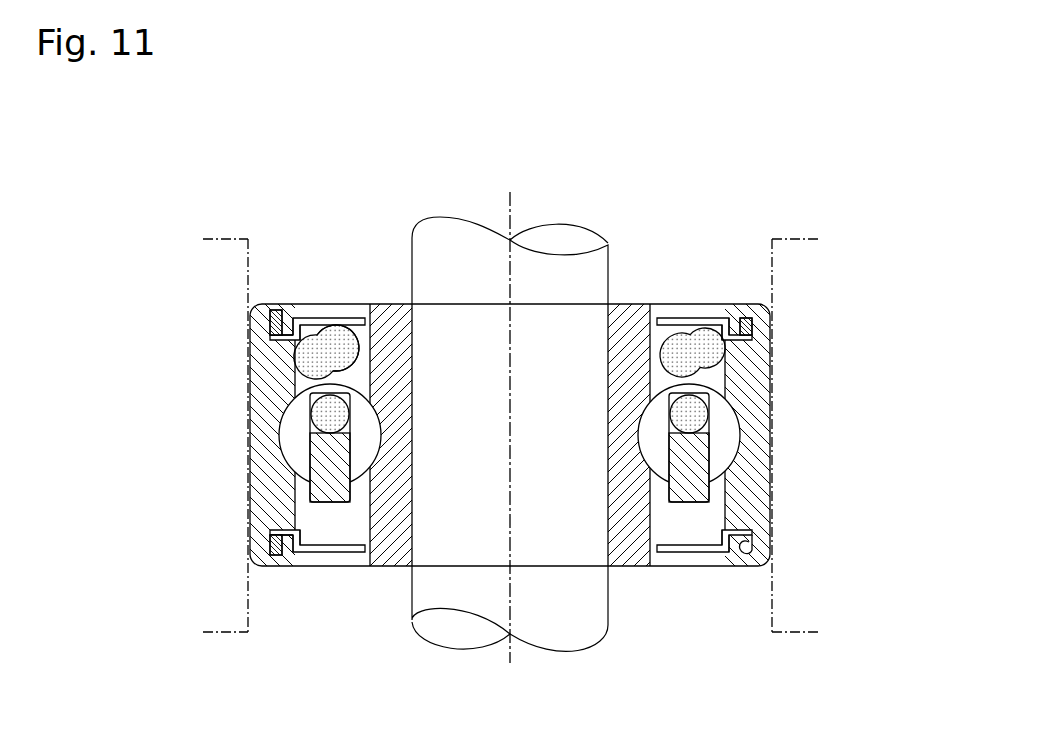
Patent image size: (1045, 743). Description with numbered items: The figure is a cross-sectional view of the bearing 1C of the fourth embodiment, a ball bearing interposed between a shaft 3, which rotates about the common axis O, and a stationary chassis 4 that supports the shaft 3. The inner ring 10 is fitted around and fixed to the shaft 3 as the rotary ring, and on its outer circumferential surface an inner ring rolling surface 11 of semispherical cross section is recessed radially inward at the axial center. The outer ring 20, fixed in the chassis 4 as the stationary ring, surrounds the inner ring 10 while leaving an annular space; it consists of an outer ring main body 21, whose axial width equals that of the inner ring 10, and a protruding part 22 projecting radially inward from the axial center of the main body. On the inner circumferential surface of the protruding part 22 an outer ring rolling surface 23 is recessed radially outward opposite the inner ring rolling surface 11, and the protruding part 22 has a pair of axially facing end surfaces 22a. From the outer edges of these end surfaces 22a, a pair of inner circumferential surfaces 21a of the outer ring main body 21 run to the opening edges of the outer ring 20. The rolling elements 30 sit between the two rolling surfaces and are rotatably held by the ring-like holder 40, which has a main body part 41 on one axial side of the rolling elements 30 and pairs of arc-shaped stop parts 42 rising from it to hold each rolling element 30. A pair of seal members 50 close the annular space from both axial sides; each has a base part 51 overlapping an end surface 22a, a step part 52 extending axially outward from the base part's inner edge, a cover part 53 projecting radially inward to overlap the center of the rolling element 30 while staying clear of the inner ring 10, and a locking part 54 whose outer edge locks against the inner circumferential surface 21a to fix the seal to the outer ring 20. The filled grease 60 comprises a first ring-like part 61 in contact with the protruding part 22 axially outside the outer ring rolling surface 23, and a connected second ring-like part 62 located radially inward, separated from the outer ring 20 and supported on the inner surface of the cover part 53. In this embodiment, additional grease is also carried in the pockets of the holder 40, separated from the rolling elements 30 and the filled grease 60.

The bearing 1C is at (536, 414).
The common axis O is at (510, 210).
The inner ring 10 is at (600, 354).
The inner ring rolling surface 11 is at (642, 530).
The outer ring 20 is at (565, 435).
The outer ring main body 21 is at (773, 312).
The inner circumferential surfaces 21a is at (744, 316).
The protruding part 22 is at (757, 423).
The end surfaces 22a is at (722, 318).
The outer ring rolling surface 23 is at (732, 508).
The rolling elements 30 is at (705, 418).
The holder 40 is at (257, 443).
The main body part 41 is at (325, 460).
The stop parts 42 is at (328, 420).
The seal members 50 is at (281, 437).
The base part 51 is at (276, 310).
The step part 52 is at (292, 318).
The cover part 53 is at (352, 318).
The locking part 54 is at (272, 322).
The filled grease 60 is at (430, 366).
The first ring-like part 61 is at (300, 358).
The second ring-like part 62 is at (340, 347).
The shaft 3 is at (612, 255).
The chassis 4 is at (219, 240).